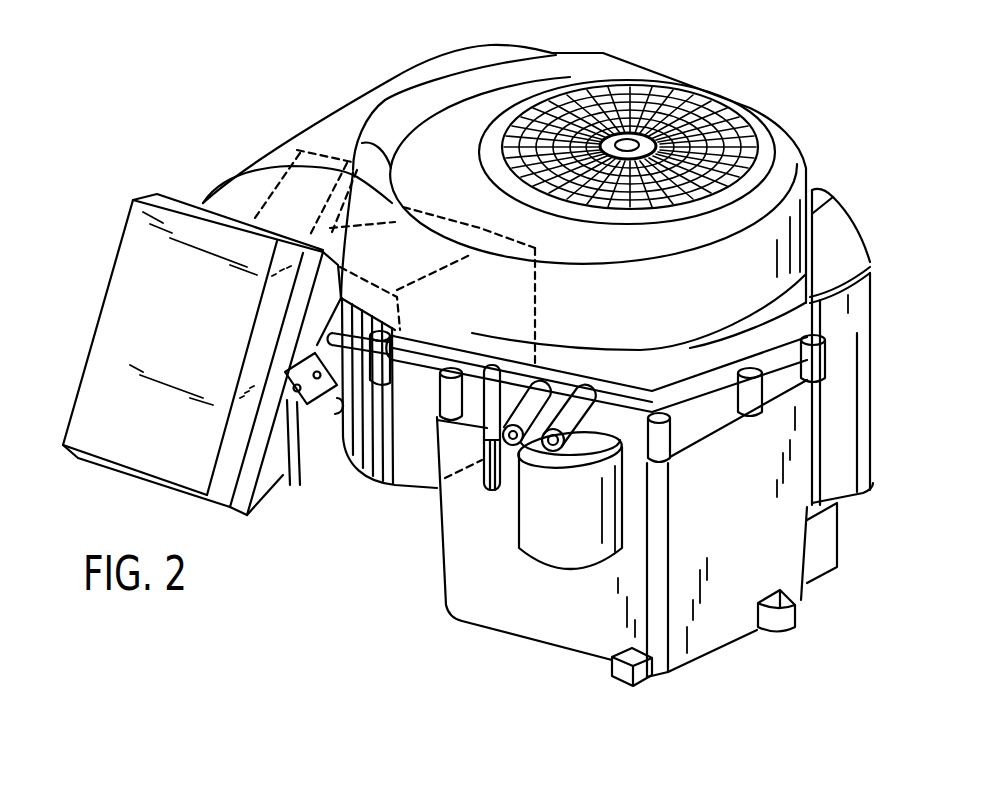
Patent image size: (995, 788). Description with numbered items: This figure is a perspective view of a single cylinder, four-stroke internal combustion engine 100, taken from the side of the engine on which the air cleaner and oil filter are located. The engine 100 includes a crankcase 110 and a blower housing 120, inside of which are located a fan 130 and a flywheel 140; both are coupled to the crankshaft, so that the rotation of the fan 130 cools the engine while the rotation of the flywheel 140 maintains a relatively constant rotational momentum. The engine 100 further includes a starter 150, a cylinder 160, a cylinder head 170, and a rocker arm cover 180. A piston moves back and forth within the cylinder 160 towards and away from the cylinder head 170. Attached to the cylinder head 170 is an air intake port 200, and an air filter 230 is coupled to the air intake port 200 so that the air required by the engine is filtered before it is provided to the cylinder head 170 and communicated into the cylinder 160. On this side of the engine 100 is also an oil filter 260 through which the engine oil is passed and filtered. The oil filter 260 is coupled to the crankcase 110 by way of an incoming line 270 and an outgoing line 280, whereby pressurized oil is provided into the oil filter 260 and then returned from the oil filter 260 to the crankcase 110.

The single cylinder internal combustion engine 100 is at (290, 97).
The crankcase 110 is at (517, 641).
The blower housing 120 is at (636, 76).
The fan 130 is at (780, 110).
The flywheel 140 is at (597, 213).
The starter 150 is at (858, 495).
The cylinder 160 is at (370, 478).
The cylinder head 170 is at (317, 400).
The rocker arm cover 180 is at (288, 143).
The air intake port 200 is at (297, 459).
The air filter 230 is at (137, 477).
The oil filter 260 is at (580, 560).
The incoming line 270 is at (527, 402).
The outgoing line 280 is at (576, 452).